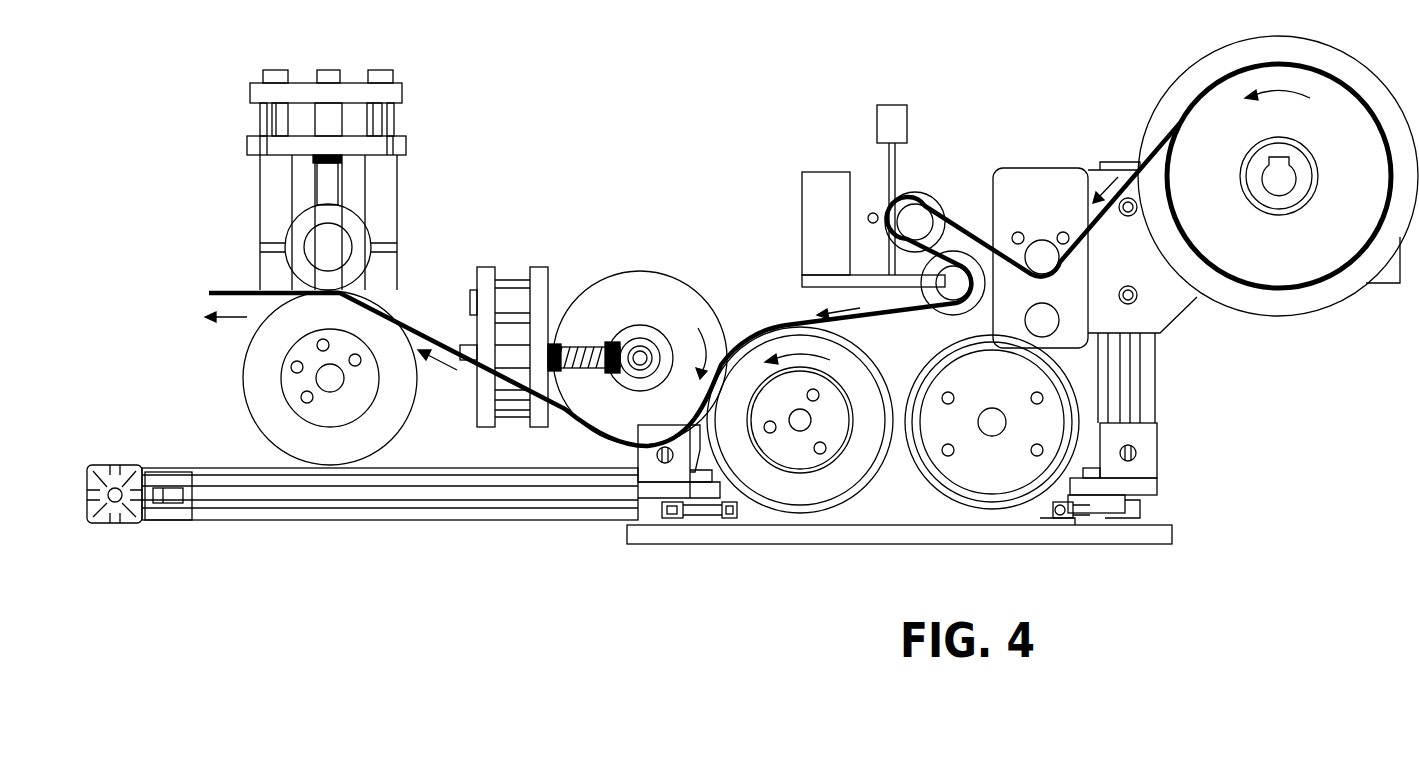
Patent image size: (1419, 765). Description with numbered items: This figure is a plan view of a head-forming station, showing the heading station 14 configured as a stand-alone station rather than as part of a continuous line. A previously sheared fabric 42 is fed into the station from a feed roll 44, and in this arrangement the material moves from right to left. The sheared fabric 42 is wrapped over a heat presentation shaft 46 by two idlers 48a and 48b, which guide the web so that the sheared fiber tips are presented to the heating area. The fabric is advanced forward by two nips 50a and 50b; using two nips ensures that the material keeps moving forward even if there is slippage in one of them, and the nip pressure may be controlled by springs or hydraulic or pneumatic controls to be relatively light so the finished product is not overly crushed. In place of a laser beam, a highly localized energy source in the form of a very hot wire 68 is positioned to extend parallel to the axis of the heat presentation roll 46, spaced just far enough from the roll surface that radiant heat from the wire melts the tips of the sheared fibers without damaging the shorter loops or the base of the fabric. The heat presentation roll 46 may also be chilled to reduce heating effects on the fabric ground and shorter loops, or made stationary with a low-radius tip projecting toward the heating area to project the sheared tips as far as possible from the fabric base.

The heading station 14 is at (647, 168).
The sheared fabric 42 is at (958, 215).
The feed roll 44 is at (1290, 308).
The heat presentation shaft 46 is at (917, 208).
The idler 48a is at (1040, 238).
The idler 48b is at (928, 296).
The nip 50a is at (680, 500).
The nip 50b is at (367, 290).
The hot wire 68 is at (872, 212).